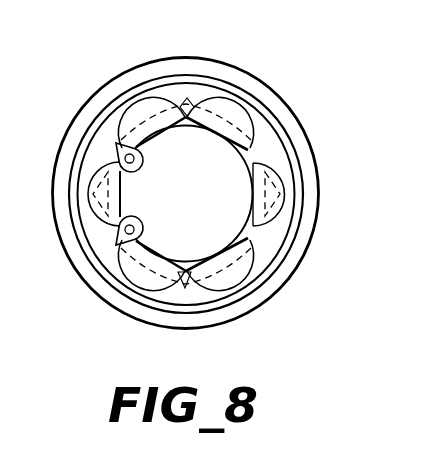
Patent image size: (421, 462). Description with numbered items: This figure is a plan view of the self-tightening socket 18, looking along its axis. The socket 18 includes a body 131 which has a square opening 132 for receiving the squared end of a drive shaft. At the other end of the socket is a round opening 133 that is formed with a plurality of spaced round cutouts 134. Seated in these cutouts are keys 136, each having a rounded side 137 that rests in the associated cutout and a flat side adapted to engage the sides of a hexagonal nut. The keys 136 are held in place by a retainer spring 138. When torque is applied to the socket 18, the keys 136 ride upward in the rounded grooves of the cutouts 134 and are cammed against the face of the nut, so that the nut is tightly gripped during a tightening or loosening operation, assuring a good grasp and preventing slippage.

The self-tightening socket 18 is at (129, 321).
The body 131 is at (145, 78).
The square opening 132 is at (192, 106).
The round opening 133 is at (188, 277).
The round cutouts 134 is at (97, 215).
The keys 136 is at (274, 212).
The rounded side 137 is at (258, 126).
The retainer spring 138 is at (118, 143).